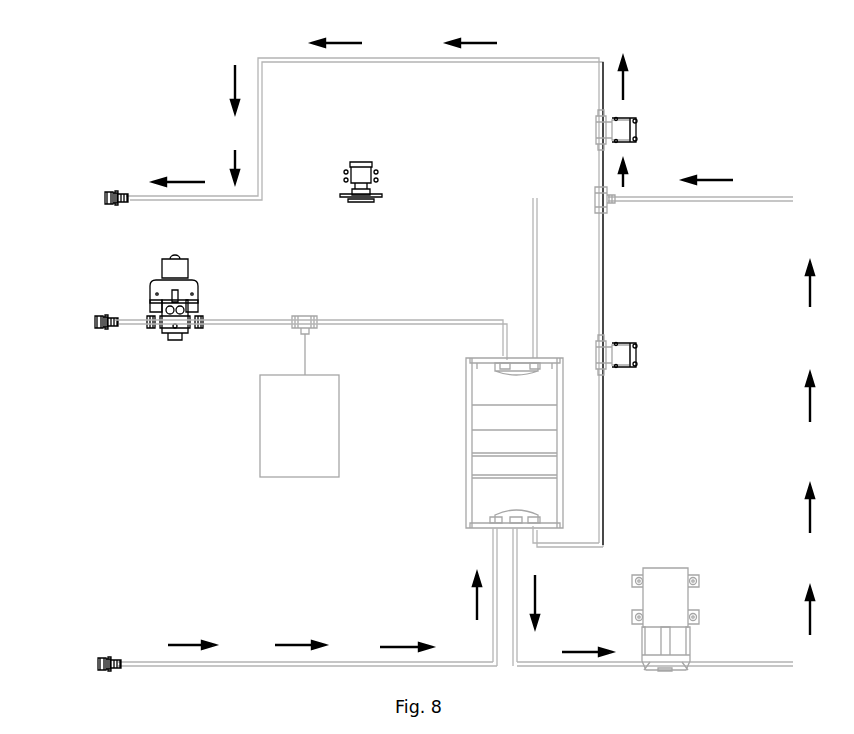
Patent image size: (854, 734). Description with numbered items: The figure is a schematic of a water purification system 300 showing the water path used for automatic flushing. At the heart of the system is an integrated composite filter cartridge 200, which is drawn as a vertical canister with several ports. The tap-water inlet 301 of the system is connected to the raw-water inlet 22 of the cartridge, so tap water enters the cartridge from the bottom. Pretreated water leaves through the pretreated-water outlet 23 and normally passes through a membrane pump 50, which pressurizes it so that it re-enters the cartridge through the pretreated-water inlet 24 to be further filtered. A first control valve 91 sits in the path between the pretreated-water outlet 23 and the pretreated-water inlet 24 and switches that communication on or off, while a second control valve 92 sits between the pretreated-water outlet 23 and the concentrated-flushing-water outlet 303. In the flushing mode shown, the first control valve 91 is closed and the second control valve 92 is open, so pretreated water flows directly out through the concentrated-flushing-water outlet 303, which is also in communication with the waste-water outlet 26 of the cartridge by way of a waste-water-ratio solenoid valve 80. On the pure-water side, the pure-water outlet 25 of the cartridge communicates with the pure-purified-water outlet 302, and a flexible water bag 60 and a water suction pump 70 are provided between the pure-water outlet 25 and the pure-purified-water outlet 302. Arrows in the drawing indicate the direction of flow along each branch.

The raw-water inlet 22 is at (493, 530).
The pretreated-water outlet 23 is at (518, 540).
The pretreated-water inlet 24 is at (535, 527).
The pure-water outlet 25 is at (503, 326).
The waste-water outlet 26 is at (537, 328).
The membrane pump 50 is at (688, 610).
The flexible water bag 60 is at (315, 437).
The water suction pump 70 is at (165, 340).
The waste-water-ratio solenoid valve 80 is at (362, 172).
The first control valve 91 is at (637, 354).
The second control valve 92 is at (637, 120).
The integrated composite filter cartridge 200 is at (488, 430).
The water purification system 300 is at (707, 125).
The tap-water inlet 301 is at (100, 658).
The pure-purified-water outlet 302 is at (100, 314).
The concentrated-flushing-water outlet 303 is at (115, 190).